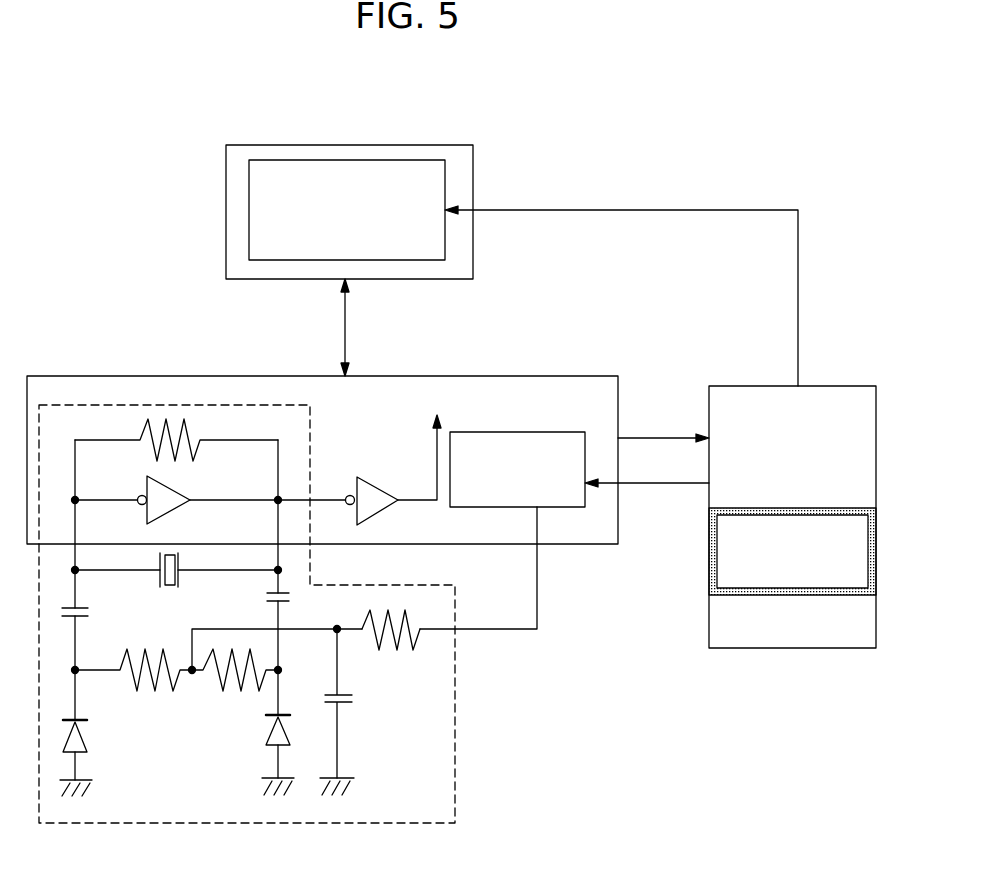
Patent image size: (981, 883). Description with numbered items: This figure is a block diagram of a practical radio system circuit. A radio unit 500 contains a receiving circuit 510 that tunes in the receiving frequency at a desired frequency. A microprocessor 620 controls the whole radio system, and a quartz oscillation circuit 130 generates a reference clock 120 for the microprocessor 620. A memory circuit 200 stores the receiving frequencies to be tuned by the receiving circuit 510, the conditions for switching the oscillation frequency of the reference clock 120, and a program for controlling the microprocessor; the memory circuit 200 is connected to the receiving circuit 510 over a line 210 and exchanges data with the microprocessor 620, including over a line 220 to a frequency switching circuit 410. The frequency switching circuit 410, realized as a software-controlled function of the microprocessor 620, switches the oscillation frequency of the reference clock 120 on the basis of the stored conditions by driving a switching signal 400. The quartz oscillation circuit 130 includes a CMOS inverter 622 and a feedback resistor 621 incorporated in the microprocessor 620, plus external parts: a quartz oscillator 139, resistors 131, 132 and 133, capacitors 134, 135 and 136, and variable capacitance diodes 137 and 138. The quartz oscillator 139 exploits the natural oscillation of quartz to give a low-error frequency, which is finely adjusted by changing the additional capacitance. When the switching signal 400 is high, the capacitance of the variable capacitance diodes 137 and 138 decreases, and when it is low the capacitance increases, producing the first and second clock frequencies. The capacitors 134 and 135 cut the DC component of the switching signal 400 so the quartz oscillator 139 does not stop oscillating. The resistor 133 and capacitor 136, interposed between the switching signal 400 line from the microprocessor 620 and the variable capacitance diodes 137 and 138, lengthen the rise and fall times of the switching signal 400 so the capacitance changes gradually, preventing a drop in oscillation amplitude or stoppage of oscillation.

The radio unit 500 is at (412, 144).
The receiving circuit 510 is at (249, 213).
The signal line 210 is at (798, 298).
The microprocessor 620 is at (572, 376).
The feedback resistor 621 is at (190, 428).
The CMOS inverter 622 is at (177, 486).
The reference clock 120 is at (437, 443).
The frequency switching circuit 410 is at (530, 432).
The signal line 220 is at (656, 487).
The memory circuit 200 is at (765, 648).
The switching signal 400 is at (538, 605).
The quartz oscillation circuit 130 is at (457, 752).
The quartz oscillator 139 is at (165, 588).
The capacitor 134 is at (86, 615).
The capacitor 135 is at (290, 600).
The resistor 131 is at (163, 690).
The resistor 132 is at (235, 690).
The resistor 133 is at (400, 650).
The capacitor 136 is at (354, 700).
The variable capacitance diode 137 is at (88, 744).
The variable capacitance diode 138 is at (268, 746).